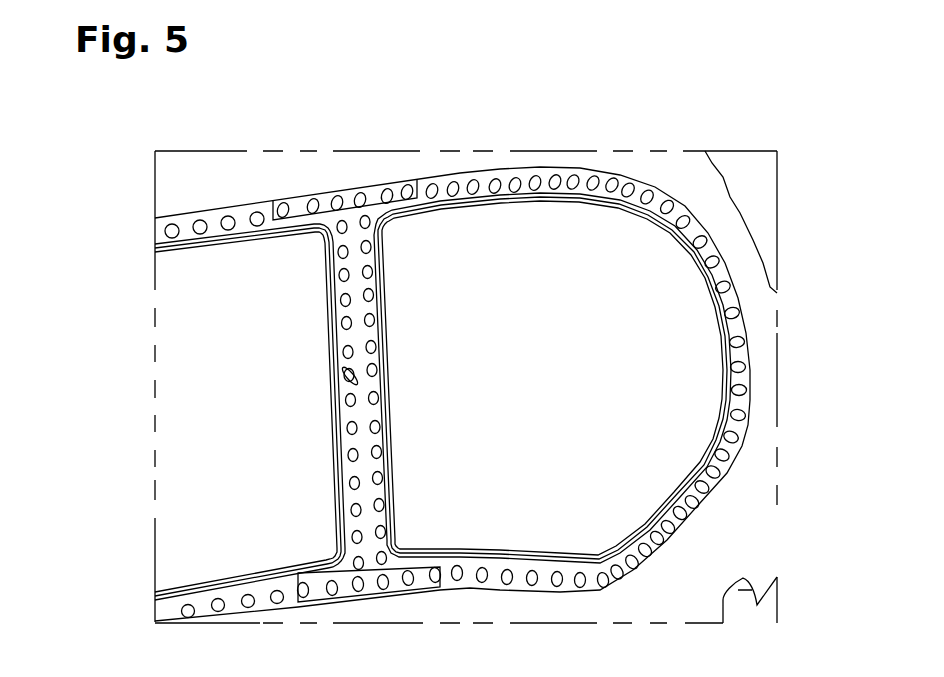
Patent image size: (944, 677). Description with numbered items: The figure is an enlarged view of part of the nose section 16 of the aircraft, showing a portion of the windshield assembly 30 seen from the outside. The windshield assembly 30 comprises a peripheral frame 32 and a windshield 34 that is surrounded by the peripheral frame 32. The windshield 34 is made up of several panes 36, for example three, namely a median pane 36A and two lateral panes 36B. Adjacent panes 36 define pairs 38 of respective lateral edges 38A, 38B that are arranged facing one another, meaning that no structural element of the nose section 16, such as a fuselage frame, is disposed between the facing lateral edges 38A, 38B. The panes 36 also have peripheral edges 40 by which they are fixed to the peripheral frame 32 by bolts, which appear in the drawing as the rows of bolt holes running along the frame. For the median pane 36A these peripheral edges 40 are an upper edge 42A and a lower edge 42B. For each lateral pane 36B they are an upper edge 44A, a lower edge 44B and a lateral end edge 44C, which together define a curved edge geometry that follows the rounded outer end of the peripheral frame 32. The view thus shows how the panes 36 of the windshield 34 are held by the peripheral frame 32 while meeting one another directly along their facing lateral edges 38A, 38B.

The nose section 16 is at (150, 187).
The windshield assembly 30 is at (697, 206).
The peripheral frame 32 is at (484, 173).
The windshield 34 is at (700, 258).
The panes 36 is at (468, 206).
The median pane 36A is at (216, 262).
The lateral pane 36B is at (603, 250).
The pair of lateral edges 38 is at (222, 342).
The lateral edge 38A is at (370, 308).
The lateral edge 38B is at (337, 378).
The peripheral edges 40 is at (461, 352).
The upper edge 42A is at (205, 236).
The lower edge 42B is at (255, 583).
The upper edge 44A is at (522, 173).
The lower edge 44B is at (593, 556).
The lateral end edge 44C is at (742, 353).